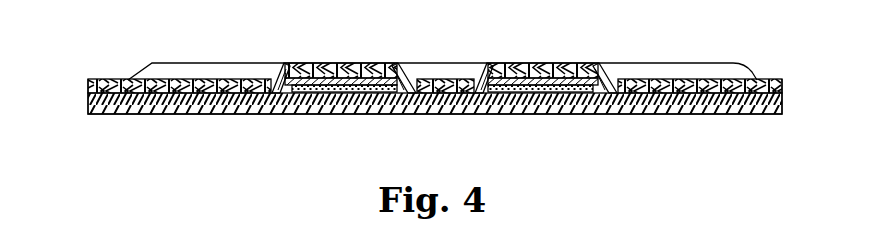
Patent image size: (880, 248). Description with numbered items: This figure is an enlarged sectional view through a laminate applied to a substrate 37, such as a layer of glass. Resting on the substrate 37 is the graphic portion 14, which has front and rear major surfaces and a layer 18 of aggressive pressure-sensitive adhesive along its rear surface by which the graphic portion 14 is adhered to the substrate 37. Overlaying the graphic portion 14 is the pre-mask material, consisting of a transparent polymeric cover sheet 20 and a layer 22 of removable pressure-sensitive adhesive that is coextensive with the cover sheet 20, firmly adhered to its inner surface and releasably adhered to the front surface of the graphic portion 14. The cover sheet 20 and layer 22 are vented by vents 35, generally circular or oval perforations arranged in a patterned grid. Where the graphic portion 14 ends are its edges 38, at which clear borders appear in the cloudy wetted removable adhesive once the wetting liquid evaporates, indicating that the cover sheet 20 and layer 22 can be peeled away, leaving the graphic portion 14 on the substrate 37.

The layer of removable pressure-sensitive adhesive 22 is at (92, 90).
The vents 35 is at (193, 83).
The edges of the graphic portions 38 is at (279, 74).
The graphic portion 14 is at (352, 68).
The cover sheet 20 is at (422, 81).
The layer of aggressive pressure-sensitive adhesive 18 is at (318, 92).
The substrate 37 is at (203, 106).